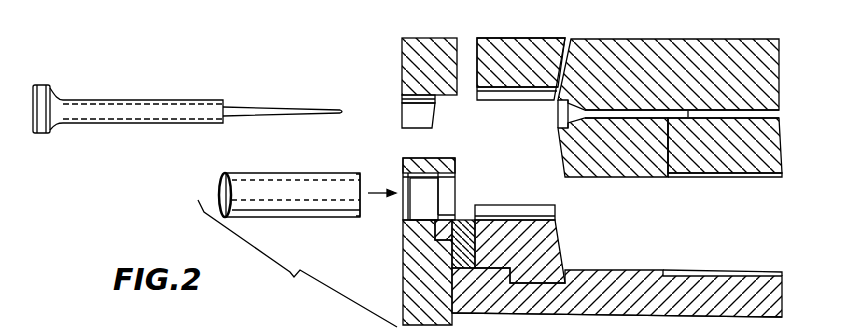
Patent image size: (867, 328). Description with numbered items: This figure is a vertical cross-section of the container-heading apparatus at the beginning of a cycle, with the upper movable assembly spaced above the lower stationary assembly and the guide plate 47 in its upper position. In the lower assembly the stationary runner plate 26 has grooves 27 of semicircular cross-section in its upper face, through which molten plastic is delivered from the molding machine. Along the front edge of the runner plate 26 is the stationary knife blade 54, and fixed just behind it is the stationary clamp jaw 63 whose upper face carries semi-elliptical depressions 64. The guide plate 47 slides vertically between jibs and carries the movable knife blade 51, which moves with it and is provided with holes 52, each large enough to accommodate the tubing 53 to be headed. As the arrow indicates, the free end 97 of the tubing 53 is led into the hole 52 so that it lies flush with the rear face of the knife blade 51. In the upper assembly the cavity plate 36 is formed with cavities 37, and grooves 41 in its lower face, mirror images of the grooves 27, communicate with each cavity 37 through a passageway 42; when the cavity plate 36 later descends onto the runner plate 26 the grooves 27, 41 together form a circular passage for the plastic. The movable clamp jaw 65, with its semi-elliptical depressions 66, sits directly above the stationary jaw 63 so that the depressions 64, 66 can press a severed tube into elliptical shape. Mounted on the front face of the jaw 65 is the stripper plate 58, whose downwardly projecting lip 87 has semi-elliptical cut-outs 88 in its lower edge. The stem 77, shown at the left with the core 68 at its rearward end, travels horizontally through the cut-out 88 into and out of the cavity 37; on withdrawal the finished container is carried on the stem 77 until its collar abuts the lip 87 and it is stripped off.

The stem 77 is at (147, 108).
The core 68 is at (263, 110).
The tubing 53 is at (300, 208).
The free end 97 is at (362, 207).
The movable knife blade 51 is at (455, 168).
The holes 52 is at (443, 213).
The guide plate 47 is at (407, 271).
The stationary knife blade 54 is at (463, 220).
The semi-elliptical depressions 64 is at (516, 205).
The stationary clamp jaw 63 is at (543, 246).
The runner plate 26 is at (770, 303).
The grooves 27 is at (737, 273).
The stripper plate 58 is at (416, 57).
The semi-elliptical cut-outs 88 is at (400, 101).
The lip 87 is at (412, 128).
The movable clamp jaw 65 is at (530, 52).
The semi-elliptical depressions 66 is at (507, 97).
The cavity plate 36 is at (767, 86).
The cavities 37 is at (610, 108).
The grooves 41 is at (737, 180).
The passageway 42 is at (667, 178).